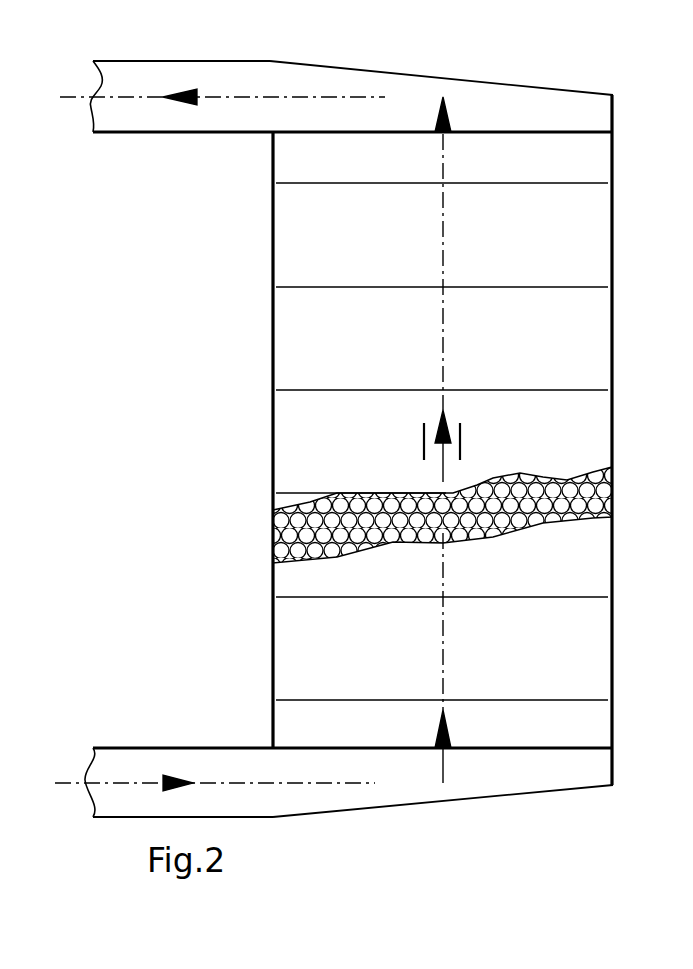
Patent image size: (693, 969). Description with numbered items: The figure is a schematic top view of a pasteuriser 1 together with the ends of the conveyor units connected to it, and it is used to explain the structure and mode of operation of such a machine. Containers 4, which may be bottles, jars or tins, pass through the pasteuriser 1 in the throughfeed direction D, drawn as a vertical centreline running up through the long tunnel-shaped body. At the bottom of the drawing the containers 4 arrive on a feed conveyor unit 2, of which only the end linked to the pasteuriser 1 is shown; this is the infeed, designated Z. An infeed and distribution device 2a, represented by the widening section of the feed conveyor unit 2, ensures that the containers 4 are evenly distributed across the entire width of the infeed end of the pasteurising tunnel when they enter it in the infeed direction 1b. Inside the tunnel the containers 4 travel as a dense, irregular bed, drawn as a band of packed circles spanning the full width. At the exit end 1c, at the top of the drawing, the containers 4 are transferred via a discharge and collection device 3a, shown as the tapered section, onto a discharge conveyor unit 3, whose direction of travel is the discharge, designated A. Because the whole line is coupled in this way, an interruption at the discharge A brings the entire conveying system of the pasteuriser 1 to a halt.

The pasteuriser 1 is at (538, 324).
The infeed direction 1b is at (391, 778).
The exit end 1c is at (447, 152).
The feed conveyor unit 2 is at (118, 767).
The infeed and distribution device 2a is at (443, 811).
The discharge conveyor unit 3 is at (118, 112).
The discharge and collection device 3a is at (493, 109).
The containers 4 is at (607, 517).
The discharge A is at (217, 97).
The infeed Z is at (147, 783).
The throughfeed direction D is at (550, 439).